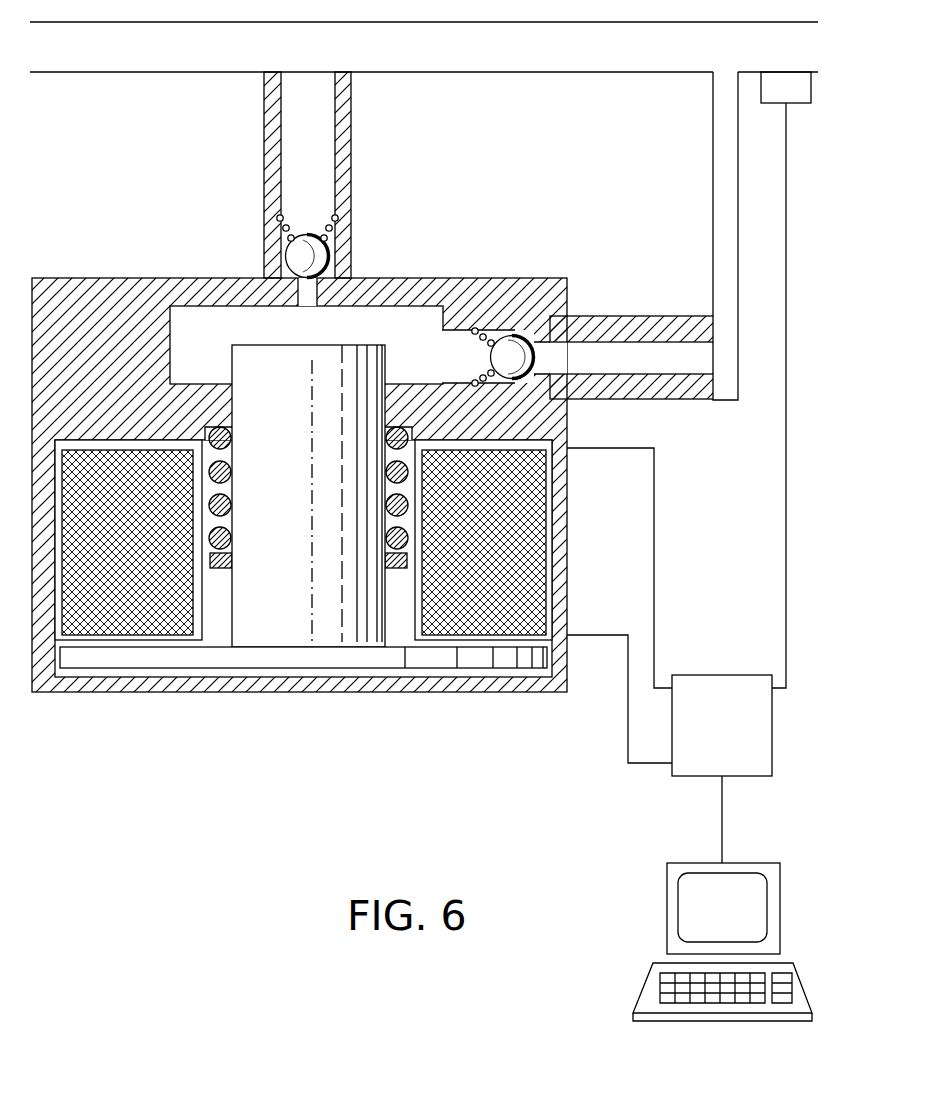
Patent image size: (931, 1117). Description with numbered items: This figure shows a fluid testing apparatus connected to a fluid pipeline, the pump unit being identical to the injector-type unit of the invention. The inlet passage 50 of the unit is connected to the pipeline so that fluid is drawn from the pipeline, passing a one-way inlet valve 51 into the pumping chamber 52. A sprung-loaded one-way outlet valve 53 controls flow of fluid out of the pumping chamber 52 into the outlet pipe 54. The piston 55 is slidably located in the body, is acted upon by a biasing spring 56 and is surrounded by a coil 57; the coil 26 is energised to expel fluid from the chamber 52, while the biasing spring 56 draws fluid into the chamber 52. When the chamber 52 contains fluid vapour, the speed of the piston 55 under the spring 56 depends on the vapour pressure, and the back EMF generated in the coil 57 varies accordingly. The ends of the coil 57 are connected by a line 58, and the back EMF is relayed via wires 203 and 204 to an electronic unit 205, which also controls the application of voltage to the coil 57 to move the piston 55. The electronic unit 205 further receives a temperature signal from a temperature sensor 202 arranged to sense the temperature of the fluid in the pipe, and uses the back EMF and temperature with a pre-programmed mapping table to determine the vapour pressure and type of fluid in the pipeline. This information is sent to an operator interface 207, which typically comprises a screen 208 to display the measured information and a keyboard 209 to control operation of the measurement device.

The coil 26 is at (552, 584).
The inlet passage 50 is at (637, 357).
The one-way inlet valve 51 is at (512, 340).
The pumping chamber 52 is at (403, 320).
The one-way outlet valve 53 is at (330, 252).
The outlet pipe 54 is at (303, 84).
The piston 55 is at (274, 352).
The biasing spring 56 is at (232, 540).
The coil 57 is at (446, 500).
The line 58 is at (540, 657).
The temperature sensor 202 is at (762, 380).
The wire 203 is at (628, 745).
The wire 204 is at (655, 563).
The electronic unit 205 is at (705, 737).
The operator interface 207 is at (667, 905).
The screen 208 is at (705, 920).
The keyboard 209 is at (640, 995).